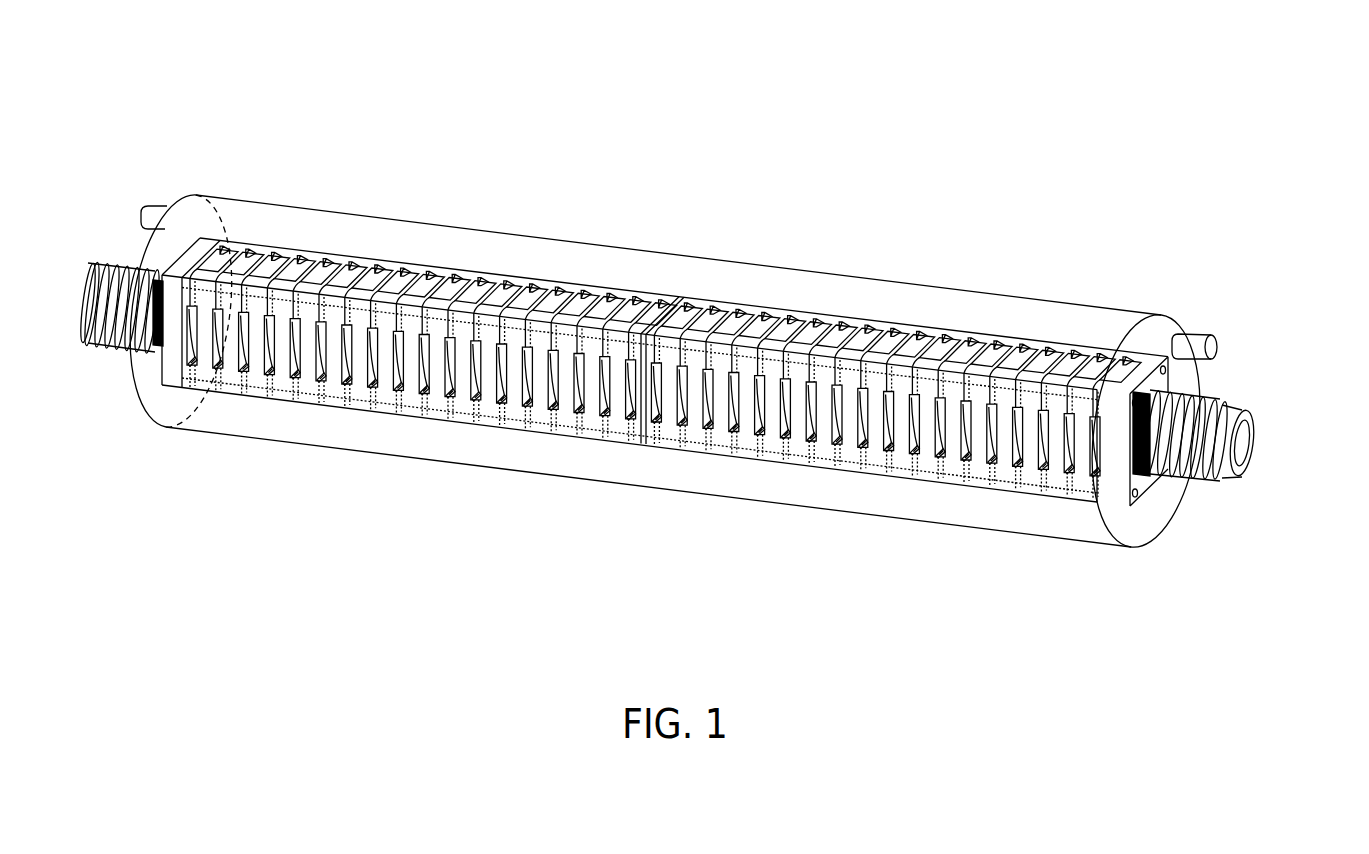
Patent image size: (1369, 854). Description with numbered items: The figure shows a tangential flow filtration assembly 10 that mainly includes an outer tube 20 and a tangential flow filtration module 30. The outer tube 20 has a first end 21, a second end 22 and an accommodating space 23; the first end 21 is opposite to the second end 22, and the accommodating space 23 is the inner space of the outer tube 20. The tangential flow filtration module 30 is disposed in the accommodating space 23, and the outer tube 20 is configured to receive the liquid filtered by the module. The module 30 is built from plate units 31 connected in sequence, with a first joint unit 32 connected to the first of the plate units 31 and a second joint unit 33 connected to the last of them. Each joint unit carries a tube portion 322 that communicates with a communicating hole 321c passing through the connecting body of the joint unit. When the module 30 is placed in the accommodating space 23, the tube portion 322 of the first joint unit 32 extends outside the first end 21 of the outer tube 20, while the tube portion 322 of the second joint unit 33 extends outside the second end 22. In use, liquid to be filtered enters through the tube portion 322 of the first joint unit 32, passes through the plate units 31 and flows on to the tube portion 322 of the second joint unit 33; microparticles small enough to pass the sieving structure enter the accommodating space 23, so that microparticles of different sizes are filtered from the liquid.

The tangential flow filtration assembly 10 is at (133, 84).
The outer tube 20 is at (618, 222).
The first end 21 is at (167, 246).
The second end 22 is at (1168, 325).
The accommodating space 23 is at (746, 286).
The tangential flow filtration module 30 is at (703, 426).
The plate units 31 is at (831, 320).
The first joint unit 32 is at (170, 372).
The second joint unit 33 is at (1117, 487).
The communicating hole 321c is at (1262, 440).
The tube portion 322 is at (102, 343).